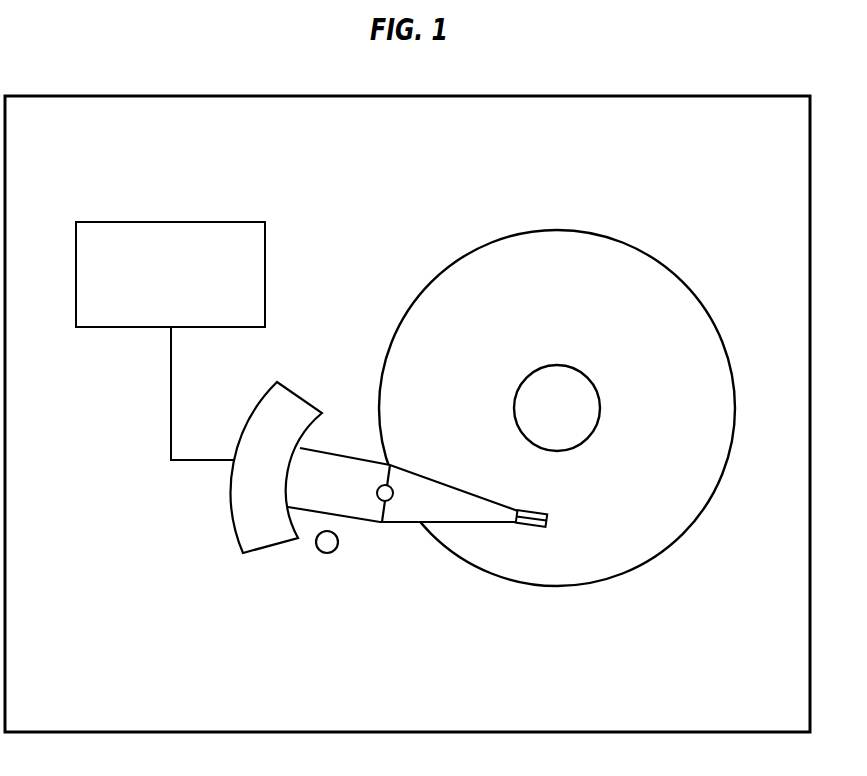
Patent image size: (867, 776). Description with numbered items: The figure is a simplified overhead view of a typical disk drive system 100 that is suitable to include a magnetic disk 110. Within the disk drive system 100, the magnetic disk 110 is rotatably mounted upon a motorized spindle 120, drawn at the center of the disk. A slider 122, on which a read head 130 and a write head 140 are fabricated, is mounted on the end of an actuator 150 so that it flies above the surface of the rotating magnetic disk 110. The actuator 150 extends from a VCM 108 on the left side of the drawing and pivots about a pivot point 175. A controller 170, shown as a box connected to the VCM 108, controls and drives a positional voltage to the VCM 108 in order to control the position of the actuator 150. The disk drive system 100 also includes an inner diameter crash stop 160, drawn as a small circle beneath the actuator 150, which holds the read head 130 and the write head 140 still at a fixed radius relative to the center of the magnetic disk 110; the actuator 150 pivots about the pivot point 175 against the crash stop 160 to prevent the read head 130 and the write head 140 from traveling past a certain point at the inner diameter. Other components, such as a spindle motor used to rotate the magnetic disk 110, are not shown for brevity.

The disk drive system 100 is at (423, 166).
The controller 170 is at (188, 295).
The VCM 108 is at (252, 555).
The magnetic disk 110 is at (575, 318).
The actuator 150 is at (367, 522).
The pivot point 175 is at (379, 488).
The motorized spindle 120 is at (599, 406).
The inner diameter crash stop 160 is at (327, 553).
The slider 122 is at (546, 525).
The read head 130 is at (547, 512).
The write head 140 is at (533, 527).